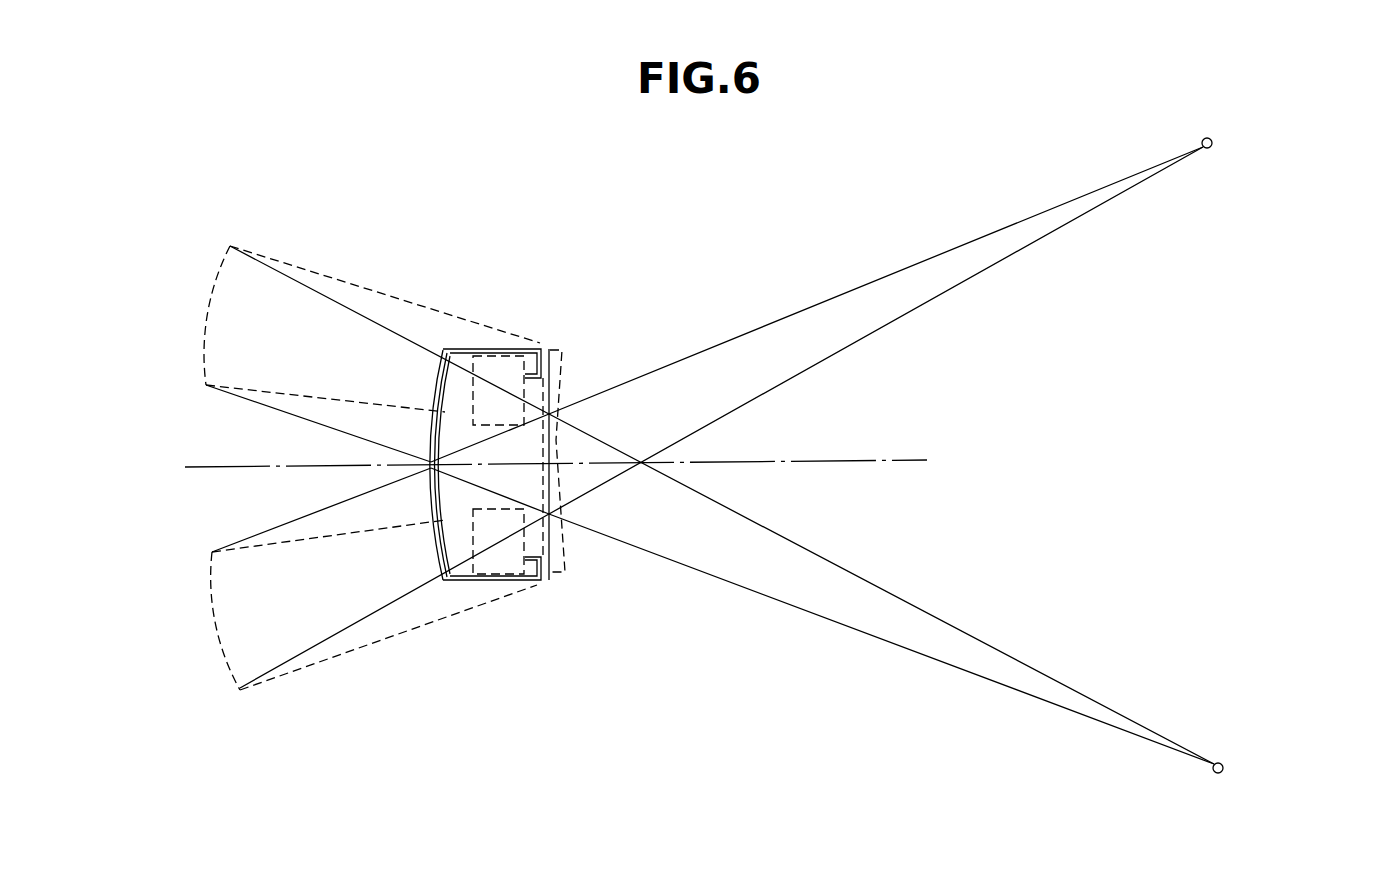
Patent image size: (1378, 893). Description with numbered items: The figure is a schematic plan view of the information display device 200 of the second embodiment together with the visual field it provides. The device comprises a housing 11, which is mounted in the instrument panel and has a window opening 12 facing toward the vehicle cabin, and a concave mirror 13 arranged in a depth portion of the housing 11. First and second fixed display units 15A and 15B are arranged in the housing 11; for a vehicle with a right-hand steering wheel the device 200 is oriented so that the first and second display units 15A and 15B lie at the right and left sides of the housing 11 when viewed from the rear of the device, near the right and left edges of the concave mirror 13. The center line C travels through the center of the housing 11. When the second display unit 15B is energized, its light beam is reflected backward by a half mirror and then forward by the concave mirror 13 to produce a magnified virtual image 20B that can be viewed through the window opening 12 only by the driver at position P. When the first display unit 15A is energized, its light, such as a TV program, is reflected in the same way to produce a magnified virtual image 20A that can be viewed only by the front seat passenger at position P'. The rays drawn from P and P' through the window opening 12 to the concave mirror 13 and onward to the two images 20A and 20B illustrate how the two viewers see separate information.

The housing 11 is at (437, 387).
The window opening 12 is at (552, 448).
The concave mirror 13 is at (437, 550).
The first fixed display unit 15A is at (507, 367).
The second fixed display unit 15B is at (512, 578).
The magnified virtual image 20A is at (220, 287).
The magnified virtual image 20B is at (228, 657).
The information display device 200 is at (797, 166).
The center line C is at (833, 462).
The driver P is at (751, 413).
The front seat passenger P' is at (802, 532).